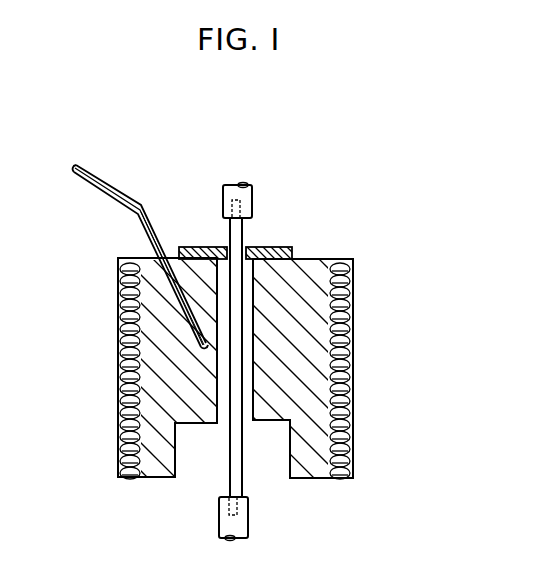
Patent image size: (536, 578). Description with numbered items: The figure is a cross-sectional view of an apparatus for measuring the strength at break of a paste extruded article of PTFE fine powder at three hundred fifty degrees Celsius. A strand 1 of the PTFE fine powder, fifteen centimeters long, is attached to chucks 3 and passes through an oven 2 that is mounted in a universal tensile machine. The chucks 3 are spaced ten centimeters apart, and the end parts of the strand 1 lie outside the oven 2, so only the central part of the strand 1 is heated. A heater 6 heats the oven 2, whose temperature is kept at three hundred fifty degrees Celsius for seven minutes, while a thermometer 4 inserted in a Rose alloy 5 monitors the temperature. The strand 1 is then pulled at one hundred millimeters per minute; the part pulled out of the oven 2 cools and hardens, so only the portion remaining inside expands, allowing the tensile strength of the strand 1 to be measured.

The strand 1 is at (222, 479).
The oven 2 is at (308, 413).
The chucks 3 is at (252, 190).
The thermometer 4 is at (113, 183).
The Rose alloy 5 is at (177, 311).
The heater 6 is at (125, 378).